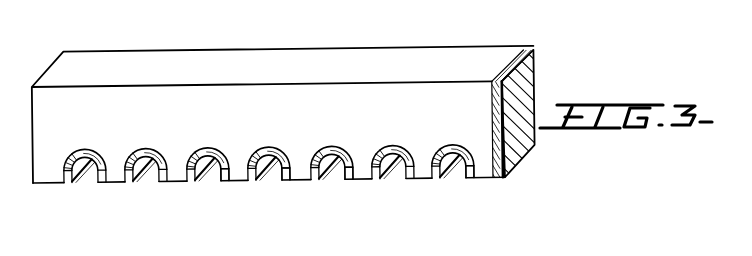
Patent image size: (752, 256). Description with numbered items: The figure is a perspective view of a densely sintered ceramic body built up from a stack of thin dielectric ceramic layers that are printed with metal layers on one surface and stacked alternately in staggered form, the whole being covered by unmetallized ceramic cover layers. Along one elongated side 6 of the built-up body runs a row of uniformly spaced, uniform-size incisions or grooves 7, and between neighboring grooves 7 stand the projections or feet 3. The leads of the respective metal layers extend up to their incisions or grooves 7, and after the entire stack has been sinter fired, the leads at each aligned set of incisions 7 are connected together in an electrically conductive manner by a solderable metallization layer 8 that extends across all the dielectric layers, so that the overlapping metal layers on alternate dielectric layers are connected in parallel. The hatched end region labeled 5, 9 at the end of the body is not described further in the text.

The projections or feet 3 is at (240, 173).
The end wall section 5 is at (520, 112).
The elongated side 6 is at (260, 72).
The incisions or grooves 7 is at (87, 176).
The solderable metallization layer 8 is at (89, 146).
The front layer 9 is at (519, 117).